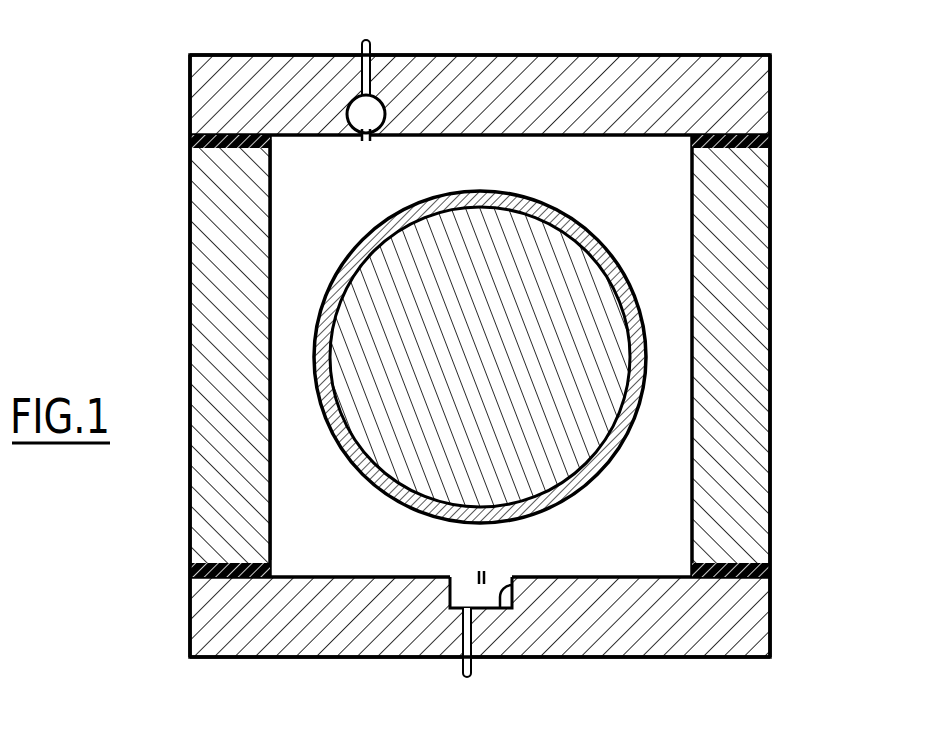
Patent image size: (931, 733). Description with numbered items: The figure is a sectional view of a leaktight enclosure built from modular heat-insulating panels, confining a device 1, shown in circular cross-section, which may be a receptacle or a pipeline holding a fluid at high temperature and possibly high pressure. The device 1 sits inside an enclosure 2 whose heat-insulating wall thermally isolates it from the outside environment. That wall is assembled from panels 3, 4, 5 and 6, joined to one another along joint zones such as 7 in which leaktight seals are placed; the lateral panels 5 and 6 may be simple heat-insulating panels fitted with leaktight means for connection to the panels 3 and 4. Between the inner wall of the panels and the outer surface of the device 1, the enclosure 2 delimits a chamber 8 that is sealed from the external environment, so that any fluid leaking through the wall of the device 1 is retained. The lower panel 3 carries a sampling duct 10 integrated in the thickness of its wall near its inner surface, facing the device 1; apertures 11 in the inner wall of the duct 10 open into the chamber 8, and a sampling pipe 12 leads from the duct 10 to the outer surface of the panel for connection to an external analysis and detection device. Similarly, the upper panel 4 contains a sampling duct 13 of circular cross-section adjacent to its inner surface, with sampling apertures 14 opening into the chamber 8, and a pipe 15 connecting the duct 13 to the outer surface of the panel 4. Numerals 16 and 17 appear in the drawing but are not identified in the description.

The device 1 is at (600, 263).
The enclosure 2 is at (783, 430).
The panel 3 is at (212, 617).
The panel 4 is at (257, 87).
The lateral panel 5 is at (233, 322).
The lateral panel 6 is at (740, 308).
The joint zone 7 is at (770, 575).
The chamber 8 is at (308, 525).
The sampling duct 10 is at (502, 608).
The apertures 11 is at (488, 570).
The sampling pipe 12 is at (458, 648).
The sampling duct 13 is at (380, 103).
The sampling apertures 14 is at (360, 148).
The pipe 15 is at (368, 80).
The supply 16 is at (695, 732).
The pump 17 is at (214, 722).